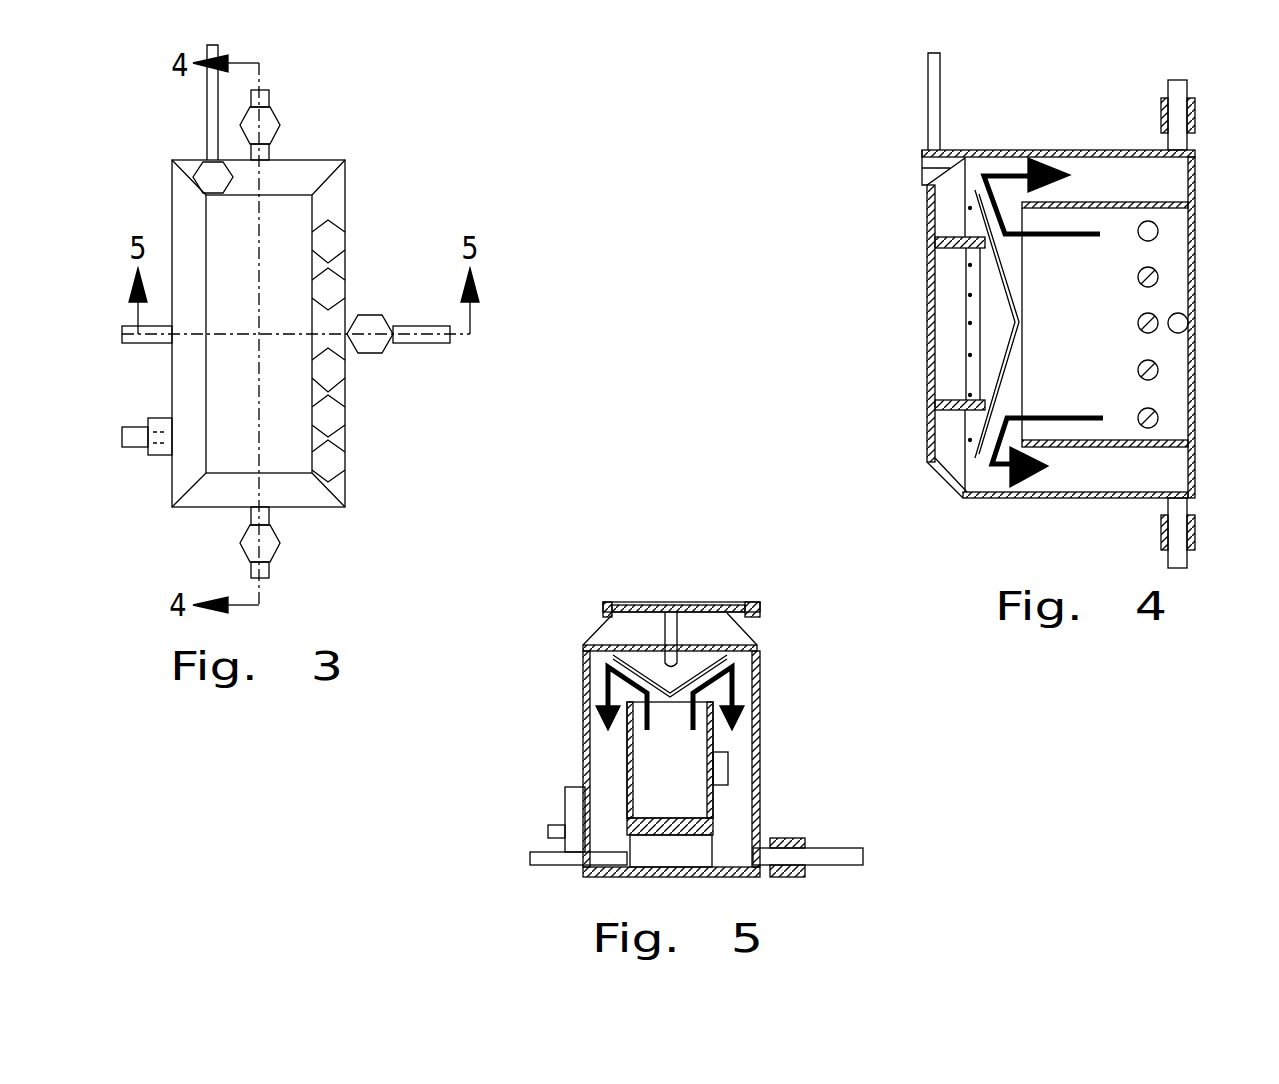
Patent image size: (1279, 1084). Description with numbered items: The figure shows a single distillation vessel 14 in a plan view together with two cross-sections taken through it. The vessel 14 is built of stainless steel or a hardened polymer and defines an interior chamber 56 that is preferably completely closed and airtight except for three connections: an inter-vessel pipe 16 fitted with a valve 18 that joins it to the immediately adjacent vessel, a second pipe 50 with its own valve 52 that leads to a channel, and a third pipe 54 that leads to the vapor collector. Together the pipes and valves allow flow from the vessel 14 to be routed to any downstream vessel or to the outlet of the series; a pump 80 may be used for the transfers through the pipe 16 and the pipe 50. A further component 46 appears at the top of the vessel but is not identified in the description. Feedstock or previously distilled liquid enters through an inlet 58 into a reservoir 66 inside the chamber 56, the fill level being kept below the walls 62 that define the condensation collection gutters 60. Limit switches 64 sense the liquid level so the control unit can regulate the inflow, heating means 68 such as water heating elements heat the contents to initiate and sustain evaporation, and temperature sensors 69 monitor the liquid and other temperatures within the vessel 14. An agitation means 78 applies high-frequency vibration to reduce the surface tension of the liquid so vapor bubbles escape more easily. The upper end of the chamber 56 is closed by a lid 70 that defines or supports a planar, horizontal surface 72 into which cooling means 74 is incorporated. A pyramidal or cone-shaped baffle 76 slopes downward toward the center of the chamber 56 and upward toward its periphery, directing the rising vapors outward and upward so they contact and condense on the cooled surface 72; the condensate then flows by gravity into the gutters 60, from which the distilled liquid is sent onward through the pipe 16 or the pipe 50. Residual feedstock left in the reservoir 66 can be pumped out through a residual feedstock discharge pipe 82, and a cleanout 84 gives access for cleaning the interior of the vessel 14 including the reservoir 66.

In FIG. 3, the distillation vessel 14 is at (108, 199).
In FIG. 4, the distillation vessel 14 is at (884, 219).
In FIG. 5, the distillation vessel 14 is at (560, 640).
In FIG. 3, the inter-vessel pipe 16 is at (428, 343).
In FIG. 5, the inter-vessel pipe 16 is at (843, 868).
In FIG. 3, the valve 18 is at (375, 322).
In FIG. 5, the valve 18 is at (785, 878).
In FIG. 3, the inlet fitting 46 is at (207, 175).
In FIG. 3, the second pipe 50 is at (270, 96).
In FIG. 4, the second pipe 50 is at (1187, 88).
In FIG. 5, the second pipe 50 is at (568, 862).
In FIG. 3, the valve 52 is at (272, 125).
In FIG. 4, the valve 52 is at (1197, 117).
In FIG. 3, the third pipe 54 is at (212, 105).
In FIG. 4, the third pipe 54 is at (930, 93).
In FIG. 4, the interior chamber 56 is at (1062, 342).
In FIG. 5, the interior chamber 56 is at (762, 791).
In FIG. 3, the inlet 58 is at (128, 335).
In FIG. 4, the inlet 58 is at (1183, 323).
In FIG. 4, the condensation collection gutters 60 is at (1117, 175).
In FIG. 5, the condensation collection gutters 60 is at (605, 757).
In FIG. 4, the walls 62 is at (1175, 204).
In FIG. 5, the walls 62 is at (625, 792).
In FIG. 3, the limit switches 64 is at (335, 372).
In FIG. 4, the reservoir 66 is at (1118, 383).
In FIG. 5, the reservoir 66 is at (653, 792).
In FIG. 3, the heating means 68 is at (335, 417).
In FIG. 4, the heating means 68 is at (1158, 275).
In FIG. 3, the temperature sensors 69 is at (338, 465).
In FIG. 3, the lid 70 is at (228, 445).
In FIG. 4, the lid 70 is at (940, 492).
In FIG. 5, the lid 70 is at (705, 592).
In FIG. 4, the surface 72 is at (953, 283).
In FIG. 5, the surface 72 is at (727, 643).
In FIG. 4, the cooling means 74 is at (967, 338).
In FIG. 4, the baffle 76 is at (993, 378).
In FIG. 5, the baffle 76 is at (633, 667).
In FIG. 5, the agitation means 78 is at (728, 770).
In FIG. 3, the pump 80 is at (333, 240).
In FIG. 3, the residual feedstock discharge pipe 82 is at (130, 430).
In FIG. 5, the residual feedstock discharge pipe 82 is at (550, 830).
In FIG. 3, the cleanout 84 is at (160, 418).
In FIG. 5, the cleanout 84 is at (565, 800).